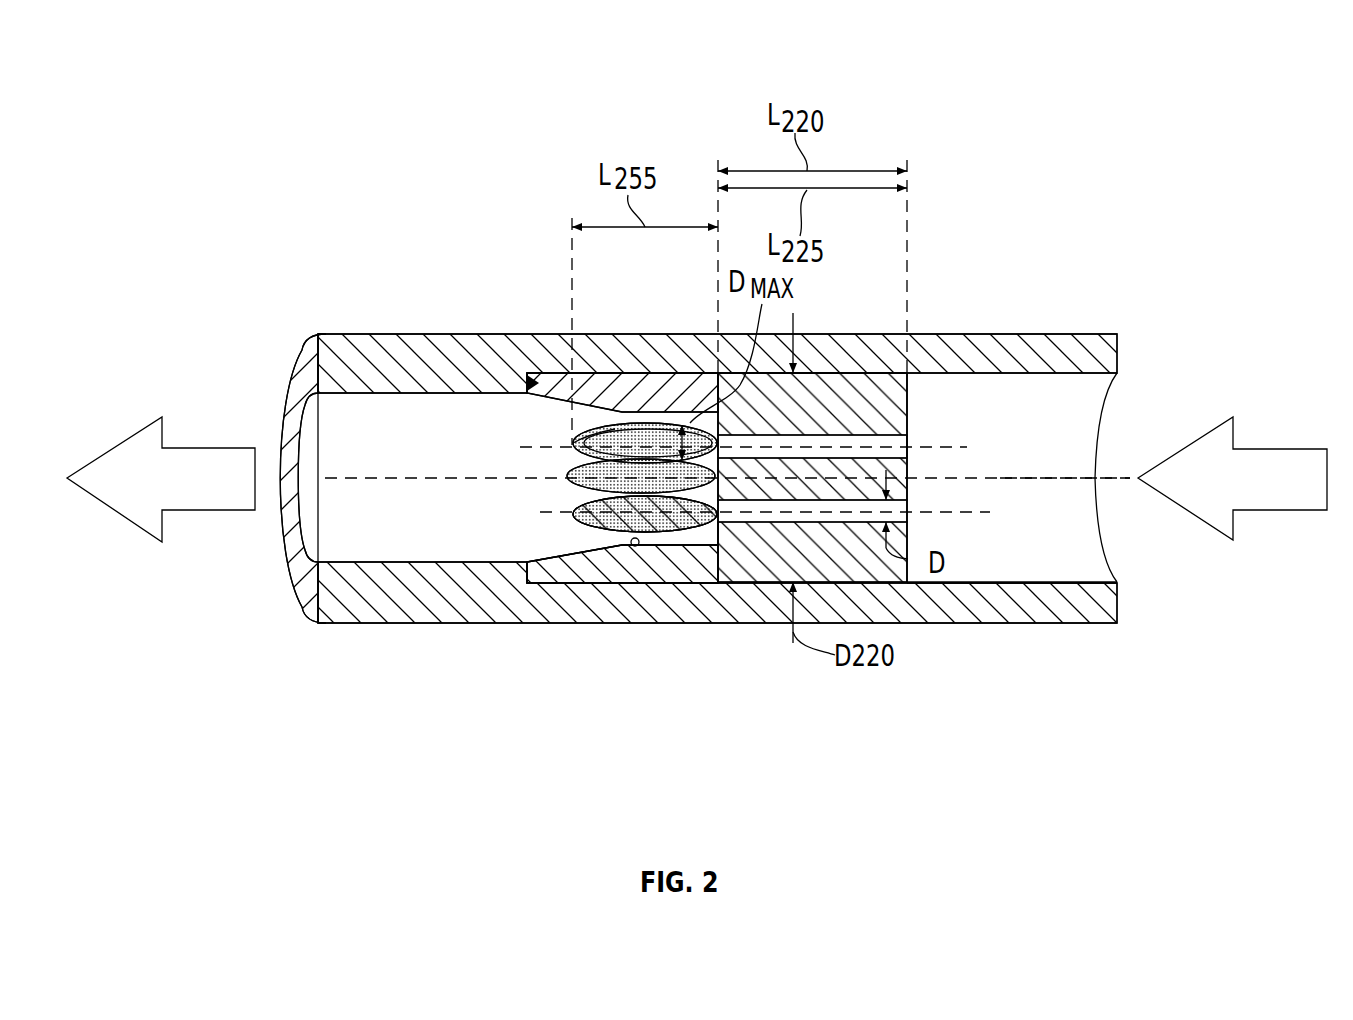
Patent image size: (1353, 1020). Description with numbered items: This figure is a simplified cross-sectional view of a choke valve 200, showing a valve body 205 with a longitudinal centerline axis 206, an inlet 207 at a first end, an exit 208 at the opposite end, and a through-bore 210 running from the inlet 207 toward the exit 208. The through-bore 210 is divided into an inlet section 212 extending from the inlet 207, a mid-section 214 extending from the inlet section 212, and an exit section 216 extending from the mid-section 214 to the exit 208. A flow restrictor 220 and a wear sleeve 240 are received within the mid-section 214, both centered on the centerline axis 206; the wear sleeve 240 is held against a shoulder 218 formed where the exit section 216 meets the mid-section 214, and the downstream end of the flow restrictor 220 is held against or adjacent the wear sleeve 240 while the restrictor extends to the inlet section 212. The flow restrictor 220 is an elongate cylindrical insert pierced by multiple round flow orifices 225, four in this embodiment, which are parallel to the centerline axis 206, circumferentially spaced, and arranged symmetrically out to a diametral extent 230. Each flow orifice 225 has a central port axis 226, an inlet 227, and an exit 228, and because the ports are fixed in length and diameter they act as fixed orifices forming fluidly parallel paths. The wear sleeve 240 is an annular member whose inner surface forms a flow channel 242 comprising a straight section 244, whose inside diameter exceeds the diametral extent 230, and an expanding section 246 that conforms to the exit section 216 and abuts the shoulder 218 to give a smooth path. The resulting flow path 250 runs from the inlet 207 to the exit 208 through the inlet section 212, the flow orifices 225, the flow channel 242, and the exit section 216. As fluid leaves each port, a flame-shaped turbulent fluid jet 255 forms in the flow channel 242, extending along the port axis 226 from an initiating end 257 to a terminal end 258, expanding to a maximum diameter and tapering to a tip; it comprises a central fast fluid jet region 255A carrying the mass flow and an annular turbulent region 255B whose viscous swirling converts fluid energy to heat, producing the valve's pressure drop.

The choke valve 200 is at (1162, 200).
The valve body 205 is at (372, 357).
The centerline axis 206 is at (1107, 478).
The inlet 207 is at (1082, 405).
The exit 208 is at (307, 434).
The through-bore 210 is at (392, 452).
The inlet section 212 is at (1078, 550).
The mid-section 214 is at (898, 583).
The exit section 216 is at (390, 556).
The shoulder 218 is at (545, 378).
The flow restrictor 220 is at (838, 382).
The flow orifices 225 is at (898, 430).
The central port axis 226 is at (970, 447).
The inlet 227 is at (905, 447).
The exit 228 is at (748, 545).
The diametral extent 230 is at (814, 433).
The wear sleeve 240 is at (625, 562).
The flow channel 242 is at (565, 550).
The straight section 244 is at (640, 545).
The expanding section 246 is at (548, 565).
The flow path 250 is at (1062, 493).
The turbulent fluid jet 255 is at (668, 428).
The central fast fluid jet region 255A is at (600, 522).
The annular turbulent region 255B is at (567, 476).
The initiating end 257 is at (806, 432).
The terminal end 258 is at (573, 445).